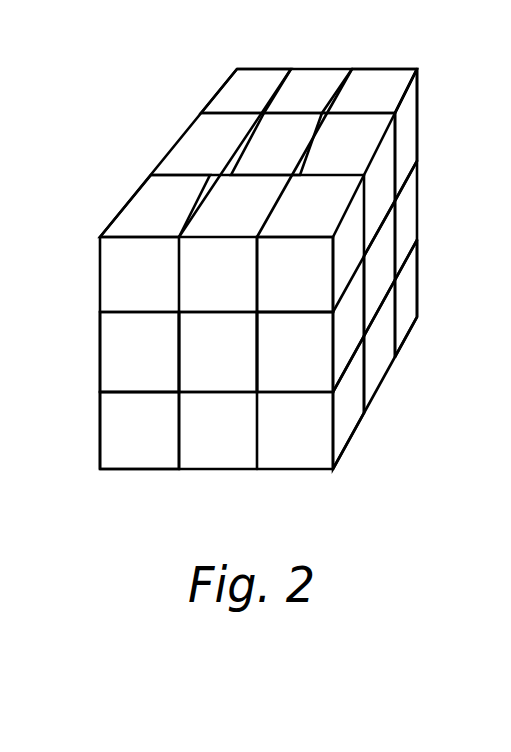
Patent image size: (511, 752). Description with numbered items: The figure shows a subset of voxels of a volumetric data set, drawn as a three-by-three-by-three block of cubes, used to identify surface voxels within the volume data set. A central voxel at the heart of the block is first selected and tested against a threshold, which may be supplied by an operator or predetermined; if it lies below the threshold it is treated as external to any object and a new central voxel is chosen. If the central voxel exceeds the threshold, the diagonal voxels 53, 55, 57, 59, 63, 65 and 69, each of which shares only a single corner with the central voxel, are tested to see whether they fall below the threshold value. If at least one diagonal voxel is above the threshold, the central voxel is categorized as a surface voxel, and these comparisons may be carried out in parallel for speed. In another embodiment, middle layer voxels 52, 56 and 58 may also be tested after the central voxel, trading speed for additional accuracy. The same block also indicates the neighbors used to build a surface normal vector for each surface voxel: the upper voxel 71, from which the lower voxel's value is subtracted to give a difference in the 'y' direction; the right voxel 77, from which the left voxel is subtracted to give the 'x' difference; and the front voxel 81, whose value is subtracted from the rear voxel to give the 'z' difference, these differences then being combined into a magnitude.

The middle layer voxel 52 is at (139, 352).
The diagonal voxel 53 is at (146, 204).
The diagonal voxel 55 is at (295, 274).
The middle layer voxel 56 is at (295, 352).
The diagonal voxel 57 is at (228, 85).
The middle layer voxel 58 is at (406, 212).
The diagonal voxel 59 is at (386, 84).
The diagonal voxel 63 is at (124, 426).
The diagonal voxel 65 is at (347, 418).
The diagonal voxel 69 is at (405, 322).
The upper voxel 71 is at (276, 144).
The right voxel 77 is at (384, 268).
The front voxel 81 is at (218, 352).